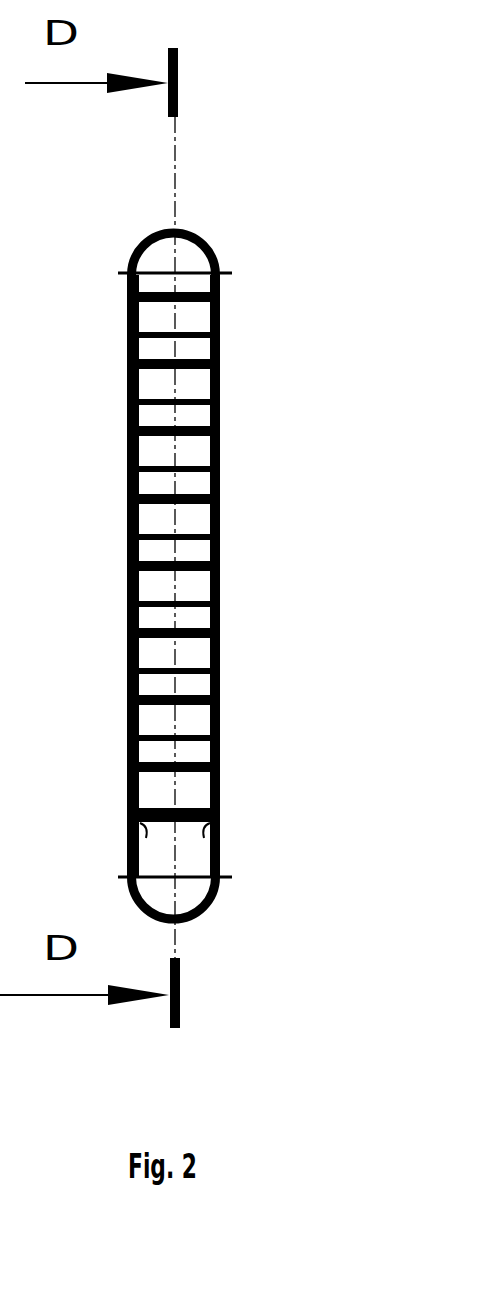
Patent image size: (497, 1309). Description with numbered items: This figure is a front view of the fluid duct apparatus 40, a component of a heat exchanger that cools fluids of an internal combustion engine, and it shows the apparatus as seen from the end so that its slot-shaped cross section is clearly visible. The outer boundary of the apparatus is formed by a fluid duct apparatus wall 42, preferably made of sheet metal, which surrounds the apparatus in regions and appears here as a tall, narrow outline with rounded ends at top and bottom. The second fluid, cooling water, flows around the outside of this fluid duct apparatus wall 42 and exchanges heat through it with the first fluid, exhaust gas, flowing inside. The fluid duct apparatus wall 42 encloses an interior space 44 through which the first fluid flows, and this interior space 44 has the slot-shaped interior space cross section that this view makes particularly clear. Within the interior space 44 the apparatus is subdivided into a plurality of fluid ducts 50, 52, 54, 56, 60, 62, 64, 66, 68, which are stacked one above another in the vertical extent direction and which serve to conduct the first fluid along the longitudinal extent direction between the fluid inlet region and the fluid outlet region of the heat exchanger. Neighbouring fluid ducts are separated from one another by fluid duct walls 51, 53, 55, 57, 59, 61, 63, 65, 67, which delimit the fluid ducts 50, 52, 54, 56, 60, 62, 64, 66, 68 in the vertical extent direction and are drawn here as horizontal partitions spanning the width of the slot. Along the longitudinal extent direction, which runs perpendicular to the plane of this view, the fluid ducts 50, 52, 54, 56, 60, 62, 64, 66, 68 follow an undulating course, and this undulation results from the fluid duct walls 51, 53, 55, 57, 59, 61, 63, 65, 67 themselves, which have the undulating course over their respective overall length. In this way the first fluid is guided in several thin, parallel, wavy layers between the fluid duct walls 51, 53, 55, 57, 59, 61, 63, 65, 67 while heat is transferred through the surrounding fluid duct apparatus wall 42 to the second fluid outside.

The fluid duct apparatus 40 is at (203, 928).
The fluid duct apparatus wall 42 is at (212, 898).
The interior space 44 is at (158, 890).
The fluid duct 50 is at (197, 265).
The fluid duct wall 51 is at (158, 290).
The fluid duct 52 is at (193, 317).
The fluid duct wall 53 is at (186, 348).
The fluid duct 54 is at (193, 384).
The fluid duct wall 55 is at (186, 415).
The fluid duct 56 is at (193, 451).
The fluid duct wall 57 is at (186, 482).
The fluid duct wall 59 is at (186, 550).
The fluid duct 60 is at (193, 519).
The fluid duct wall 61 is at (186, 617).
The fluid duct 62 is at (193, 586).
The fluid duct wall 63 is at (186, 684).
The fluid duct 64 is at (193, 653).
The fluid duct wall 65 is at (186, 751).
The fluid duct 66 is at (193, 720).
The fluid duct wall 67 is at (205, 812).
The fluid duct 68 is at (193, 790).